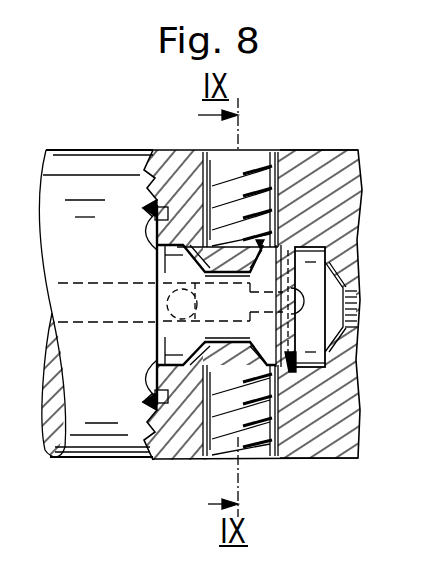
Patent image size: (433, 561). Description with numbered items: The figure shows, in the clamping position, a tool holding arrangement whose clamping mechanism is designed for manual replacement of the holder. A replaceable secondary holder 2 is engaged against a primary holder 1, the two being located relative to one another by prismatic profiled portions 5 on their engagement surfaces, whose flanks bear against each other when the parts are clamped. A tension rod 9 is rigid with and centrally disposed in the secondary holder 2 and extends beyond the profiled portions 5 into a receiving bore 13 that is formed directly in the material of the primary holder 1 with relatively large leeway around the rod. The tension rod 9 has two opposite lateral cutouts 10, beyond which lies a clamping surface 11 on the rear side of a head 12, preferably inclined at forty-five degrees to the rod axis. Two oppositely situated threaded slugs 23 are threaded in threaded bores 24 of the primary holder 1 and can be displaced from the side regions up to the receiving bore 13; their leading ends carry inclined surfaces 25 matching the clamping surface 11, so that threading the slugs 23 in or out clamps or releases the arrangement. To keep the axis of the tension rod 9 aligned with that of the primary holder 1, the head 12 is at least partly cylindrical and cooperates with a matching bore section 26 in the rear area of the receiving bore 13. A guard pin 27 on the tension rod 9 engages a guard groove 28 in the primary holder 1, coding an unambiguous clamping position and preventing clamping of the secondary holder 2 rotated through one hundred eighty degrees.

The primary holder 1 is at (352, 170).
The secondary holder 2 is at (69, 163).
The profiled portions 5 is at (152, 190).
The tension rod 9 is at (183, 262).
The lateral cutouts 10 is at (197, 372).
The clamping surface 11 is at (292, 354).
The head 12 is at (302, 247).
The receiving bore 13 is at (165, 220).
The threaded slugs 23 is at (247, 178).
The threaded bores 24 is at (280, 446).
The inclined surfaces 25 is at (297, 192).
The bore section 26 is at (288, 378).
The guard pin 27 is at (170, 320).
The guard groove 28 is at (300, 302).